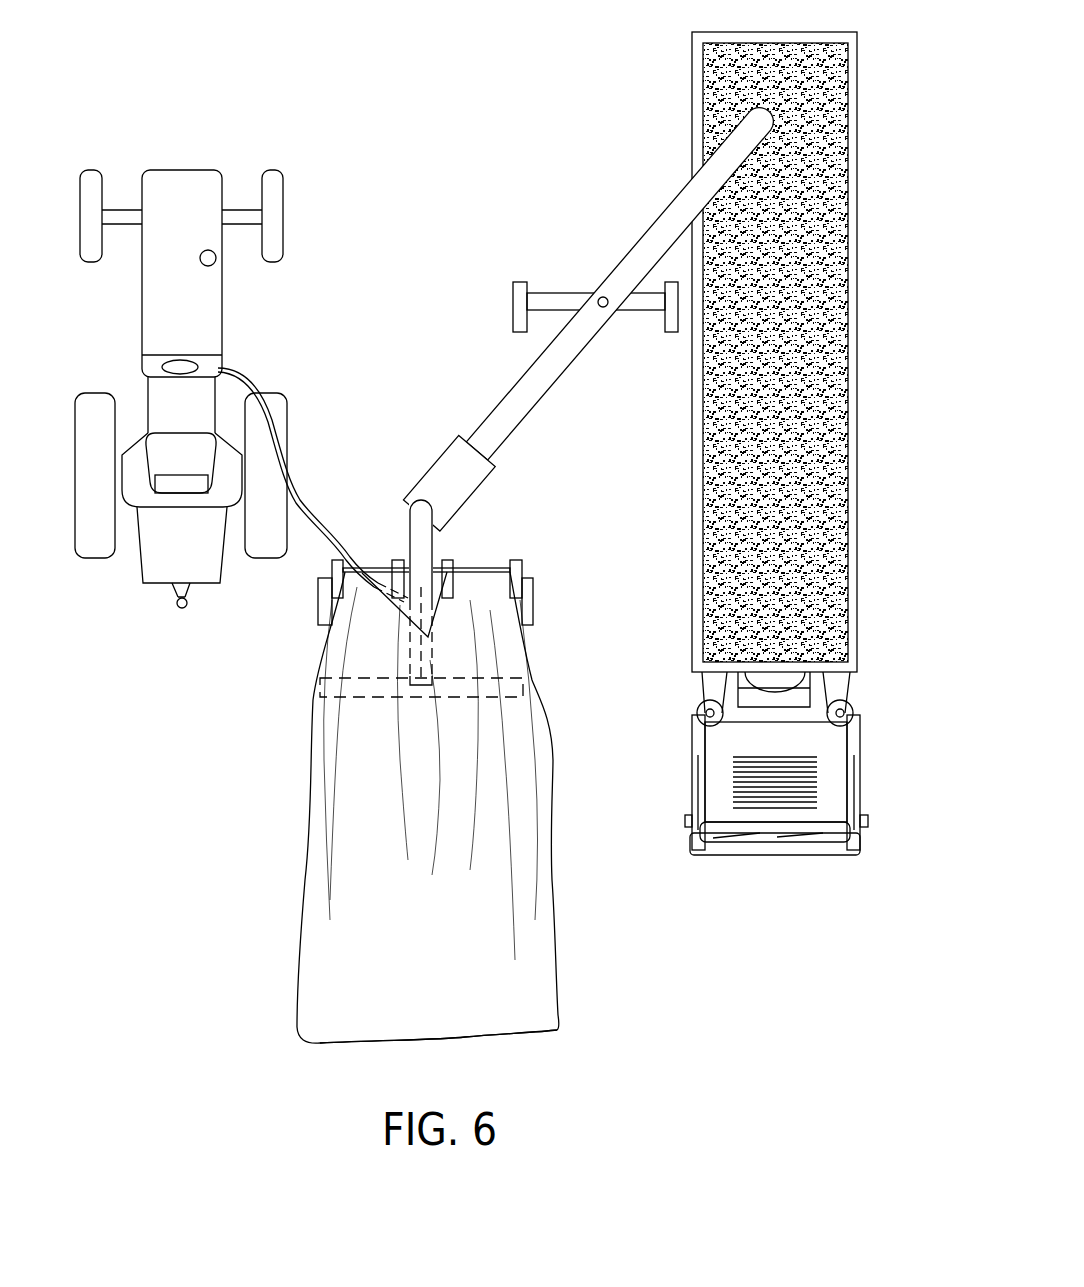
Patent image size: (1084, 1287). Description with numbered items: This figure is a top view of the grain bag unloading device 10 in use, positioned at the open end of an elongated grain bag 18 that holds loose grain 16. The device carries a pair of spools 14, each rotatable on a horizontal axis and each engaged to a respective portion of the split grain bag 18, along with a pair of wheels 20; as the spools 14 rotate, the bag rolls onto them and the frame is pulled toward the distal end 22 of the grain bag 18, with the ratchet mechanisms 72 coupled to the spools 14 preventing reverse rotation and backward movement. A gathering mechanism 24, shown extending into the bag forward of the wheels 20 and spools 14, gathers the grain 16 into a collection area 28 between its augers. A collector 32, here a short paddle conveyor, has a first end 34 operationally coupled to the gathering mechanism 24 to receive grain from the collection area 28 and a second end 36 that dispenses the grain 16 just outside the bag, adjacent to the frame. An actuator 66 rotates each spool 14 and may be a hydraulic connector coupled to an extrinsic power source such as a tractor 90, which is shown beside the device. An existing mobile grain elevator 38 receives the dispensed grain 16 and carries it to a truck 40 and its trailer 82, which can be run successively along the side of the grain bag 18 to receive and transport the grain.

The grain bag unloading device 10 is at (405, 609).
The spool 14 is at (373, 553).
The grain 16 is at (822, 164).
The grain bag 18 is at (532, 938).
The wheel 20 is at (319, 600).
The distal end 22 is at (466, 1040).
The gathering mechanism 24 is at (492, 696).
The collection area 28 is at (426, 700).
The collector 32 is at (423, 535).
The first end 34 is at (418, 697).
The second end 36 is at (418, 499).
The grain elevator 38 is at (555, 371).
The truck 40 is at (752, 695).
The actuator 66 is at (300, 478).
The ratchet mechanism 72 is at (398, 555).
The trailer 82 is at (703, 82).
The tractor 90 is at (162, 346).